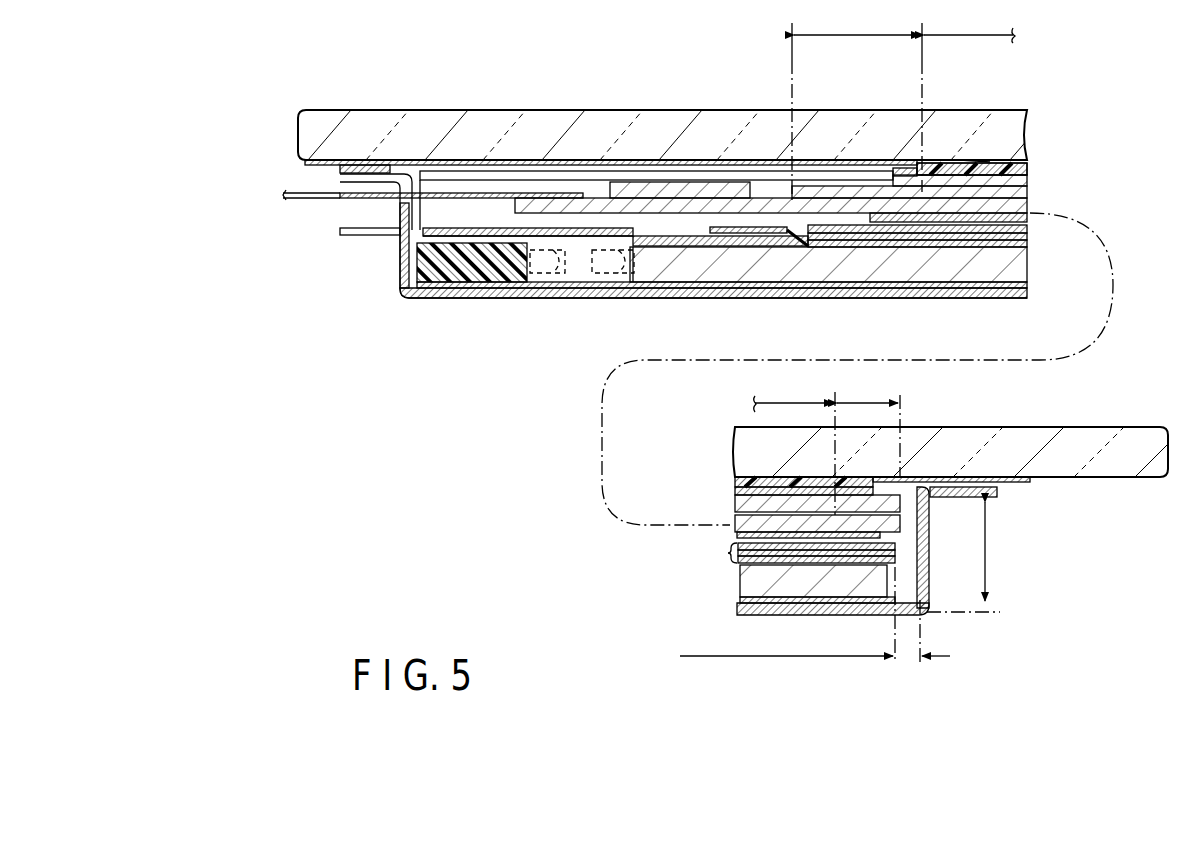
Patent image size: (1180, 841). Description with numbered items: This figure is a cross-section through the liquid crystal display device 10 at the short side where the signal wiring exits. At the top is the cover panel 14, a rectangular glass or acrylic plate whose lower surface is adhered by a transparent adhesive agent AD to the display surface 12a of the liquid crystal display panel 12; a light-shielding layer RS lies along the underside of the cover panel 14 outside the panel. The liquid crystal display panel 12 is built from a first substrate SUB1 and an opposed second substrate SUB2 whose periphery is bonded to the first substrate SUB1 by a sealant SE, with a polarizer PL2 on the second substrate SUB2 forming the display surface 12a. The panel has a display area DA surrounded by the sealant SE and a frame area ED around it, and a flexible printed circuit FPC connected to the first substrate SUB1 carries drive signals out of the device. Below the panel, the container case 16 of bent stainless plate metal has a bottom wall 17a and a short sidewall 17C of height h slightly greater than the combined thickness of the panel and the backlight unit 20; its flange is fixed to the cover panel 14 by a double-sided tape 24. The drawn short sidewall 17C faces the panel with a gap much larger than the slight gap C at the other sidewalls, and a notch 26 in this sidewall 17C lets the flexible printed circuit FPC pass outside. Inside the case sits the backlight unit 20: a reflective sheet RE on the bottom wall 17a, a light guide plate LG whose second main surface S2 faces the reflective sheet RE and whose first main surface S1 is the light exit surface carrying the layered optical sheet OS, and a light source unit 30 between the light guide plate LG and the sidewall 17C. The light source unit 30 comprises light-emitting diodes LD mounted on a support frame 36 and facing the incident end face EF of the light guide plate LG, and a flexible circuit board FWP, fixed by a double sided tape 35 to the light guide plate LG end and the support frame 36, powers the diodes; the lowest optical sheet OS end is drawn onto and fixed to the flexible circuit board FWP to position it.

The display device 10 is at (508, 78).
The cover panel 14 is at (598, 118).
The light shielding layer RS is at (318, 162).
The double-sided tape 24 is at (352, 165).
The notch 26 is at (410, 175).
The flexible printed circuit FPC is at (452, 193).
The sealant SE is at (905, 172).
The transparent adhesive agent AD is at (960, 165).
The display surface 12a is at (975, 162).
The polarizer PL2 is at (1000, 168).
The second substrate SUB2 is at (1025, 178).
The first substrate SUB1 is at (1025, 192).
The liquid crystal display panel 12 is at (955, 298).
The backlight unit 20 is at (746, 439).
The short sidewall 17C is at (398, 250).
The container case 16 is at (670, 442).
The flexible circuit board FWP is at (462, 226).
The support frame 36 is at (500, 270).
The double sided tape 35 is at (483, 237).
The light source unit 30 is at (547, 294).
The light-emitting diodes LD is at (575, 262).
The incident end face EF is at (625, 248).
The bottom wall 17a is at (700, 298).
The light guide plate LG is at (818, 272).
The reflective sheet RE is at (895, 286).
The second main surface S2 is at (985, 242).
The first main surface S1 is at (1000, 232).
The optical sheet OS is at (730, 552).
The frame area ED is at (857, 262).
The display area DA is at (884, 211).
The height h is at (966, 557).
The gap C is at (815, 615).